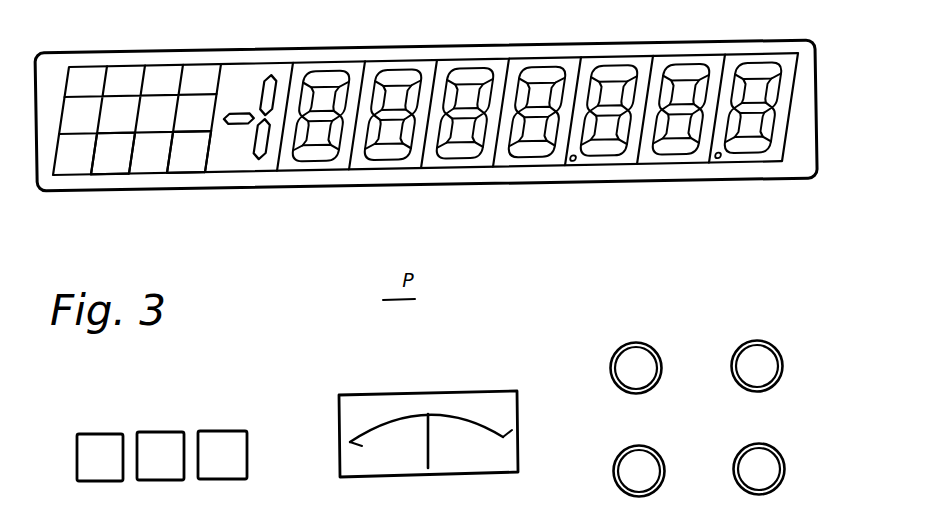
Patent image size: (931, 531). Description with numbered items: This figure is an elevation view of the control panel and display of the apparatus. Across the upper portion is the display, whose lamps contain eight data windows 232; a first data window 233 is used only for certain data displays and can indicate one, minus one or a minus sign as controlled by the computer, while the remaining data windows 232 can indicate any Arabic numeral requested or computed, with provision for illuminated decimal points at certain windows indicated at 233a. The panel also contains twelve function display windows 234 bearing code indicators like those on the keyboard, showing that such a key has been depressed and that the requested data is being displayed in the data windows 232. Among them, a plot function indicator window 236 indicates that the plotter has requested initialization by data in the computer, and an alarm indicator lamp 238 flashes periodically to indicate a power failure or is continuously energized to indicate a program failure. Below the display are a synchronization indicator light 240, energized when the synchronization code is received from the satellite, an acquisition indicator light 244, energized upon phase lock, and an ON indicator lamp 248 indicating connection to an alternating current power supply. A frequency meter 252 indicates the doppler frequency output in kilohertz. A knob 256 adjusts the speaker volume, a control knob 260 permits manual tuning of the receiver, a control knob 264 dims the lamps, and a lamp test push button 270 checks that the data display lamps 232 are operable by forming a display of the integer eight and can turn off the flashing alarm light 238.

The data windows 232 is at (803, 33).
The first data window 233 is at (230, 165).
The illuminated decimal points 233a is at (572, 161).
The function display windows 234 is at (225, 45).
The plot function indicator window 236 is at (112, 172).
The alarm indicator lamp 238 is at (183, 170).
The synchronization indicator light 240 is at (230, 431).
The acquisition indicator light 244 is at (162, 432).
The ON indicator lamp 248 is at (95, 433).
The frequency meter 252 is at (378, 392).
The knob 256 is at (614, 478).
The control knob 260 is at (610, 364).
The control knob 264 is at (778, 350).
The lamp test push button 270 is at (780, 485).